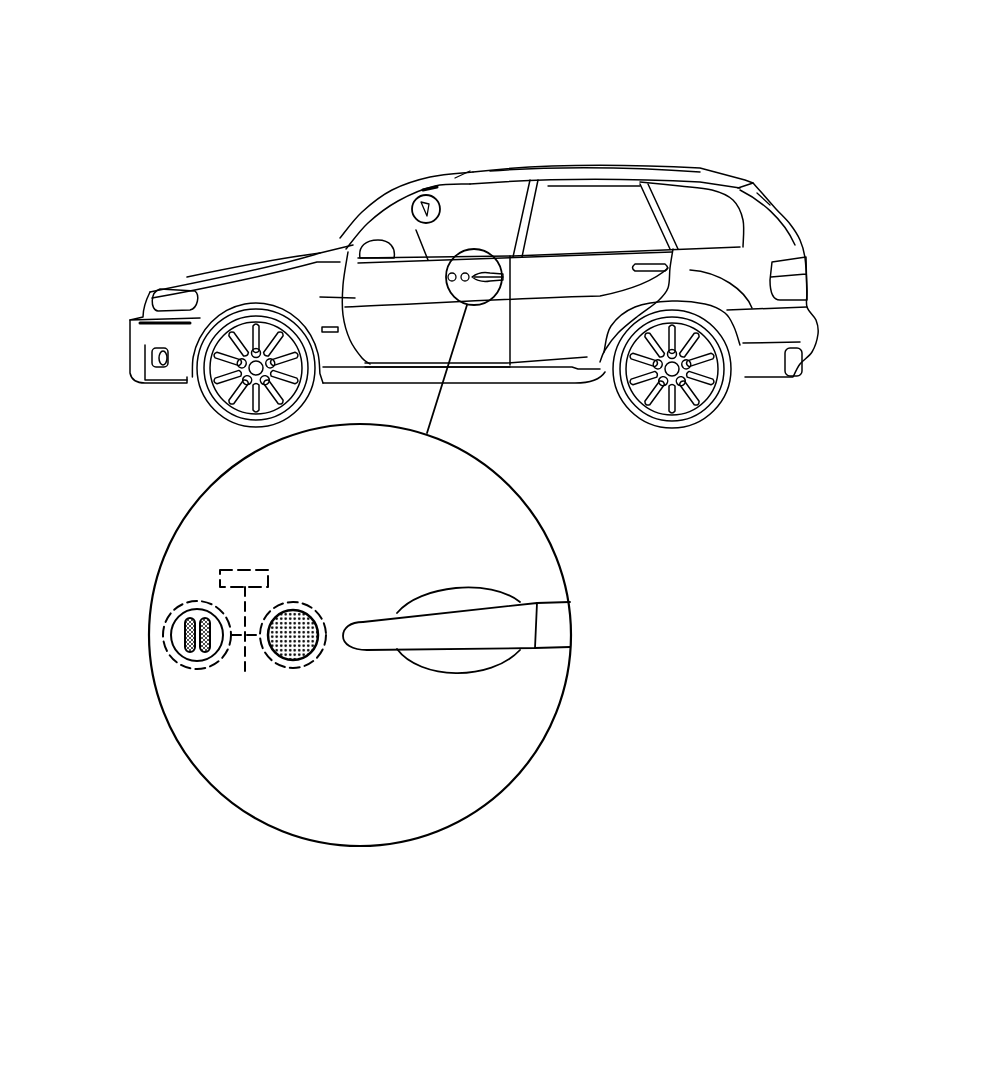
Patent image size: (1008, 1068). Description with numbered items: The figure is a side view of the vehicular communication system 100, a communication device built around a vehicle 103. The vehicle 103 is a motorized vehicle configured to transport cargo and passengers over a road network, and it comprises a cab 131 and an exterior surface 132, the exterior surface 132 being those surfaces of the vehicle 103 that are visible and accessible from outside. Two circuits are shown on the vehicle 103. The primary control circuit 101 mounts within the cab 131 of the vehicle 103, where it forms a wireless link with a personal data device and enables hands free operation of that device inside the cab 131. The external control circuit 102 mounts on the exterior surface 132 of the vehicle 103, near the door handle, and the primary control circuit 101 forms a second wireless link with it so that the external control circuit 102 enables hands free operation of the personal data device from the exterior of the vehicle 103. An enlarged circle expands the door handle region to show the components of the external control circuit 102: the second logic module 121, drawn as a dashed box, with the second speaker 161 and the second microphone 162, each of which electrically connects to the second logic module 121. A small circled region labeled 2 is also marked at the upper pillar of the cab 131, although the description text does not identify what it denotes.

The vehicular communication system 100 is at (197, 168).
The primary control circuit 101 is at (442, 208).
The sensor unit 2 is at (420, 197).
The cab 131 is at (570, 205).
The vehicle 103 is at (773, 207).
The exterior surface 132 is at (483, 320).
The second microphone 162 is at (186, 625).
The second logic module 121 is at (232, 570).
The external control circuit 102 is at (243, 655).
The second speaker 161 is at (293, 632).